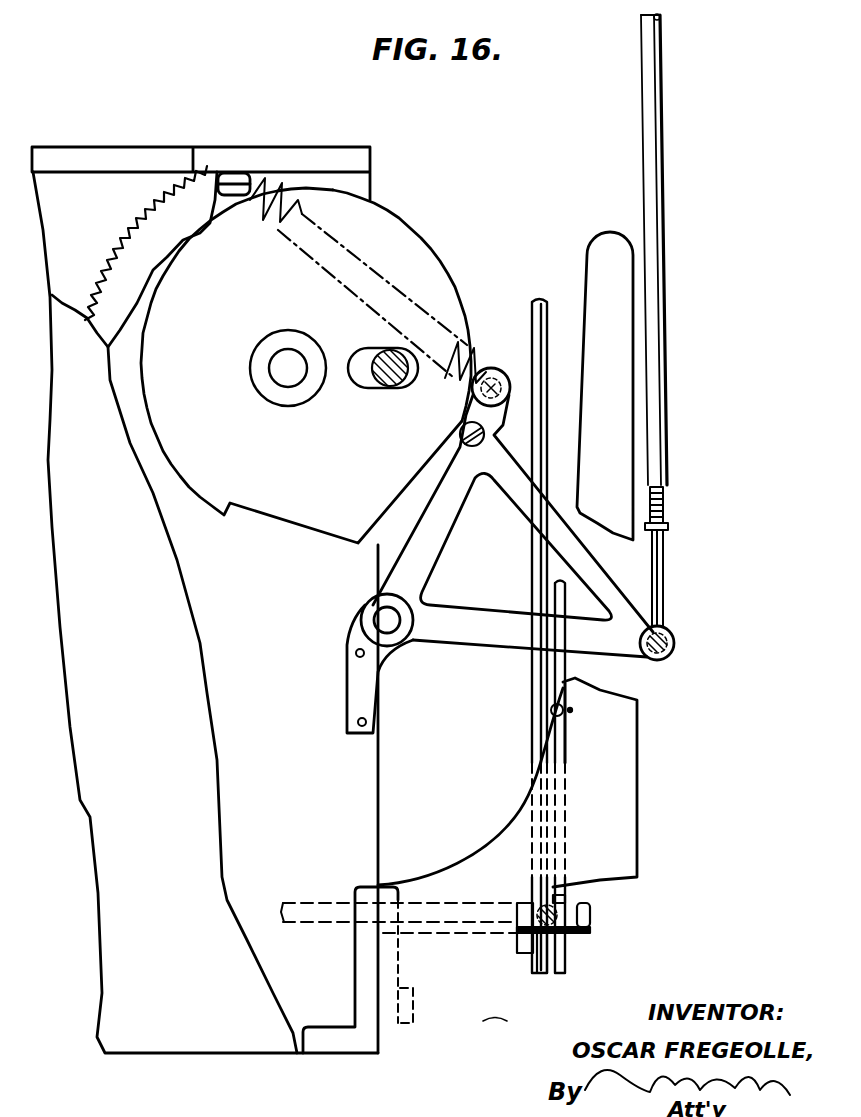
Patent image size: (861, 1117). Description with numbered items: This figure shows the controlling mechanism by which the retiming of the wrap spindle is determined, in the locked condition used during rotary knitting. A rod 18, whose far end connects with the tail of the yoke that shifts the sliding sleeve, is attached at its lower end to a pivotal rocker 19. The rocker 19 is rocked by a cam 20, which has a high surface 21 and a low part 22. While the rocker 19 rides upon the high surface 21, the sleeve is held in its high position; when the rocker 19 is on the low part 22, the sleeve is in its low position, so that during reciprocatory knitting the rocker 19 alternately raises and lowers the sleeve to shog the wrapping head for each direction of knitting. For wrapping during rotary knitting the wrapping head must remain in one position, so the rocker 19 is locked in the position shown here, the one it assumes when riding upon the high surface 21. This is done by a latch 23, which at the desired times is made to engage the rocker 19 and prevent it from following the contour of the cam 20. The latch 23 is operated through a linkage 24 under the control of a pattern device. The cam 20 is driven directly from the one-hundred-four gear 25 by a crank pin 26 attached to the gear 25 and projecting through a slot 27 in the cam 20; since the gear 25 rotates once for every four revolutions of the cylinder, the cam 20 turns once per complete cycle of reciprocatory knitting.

The rod 18 is at (655, 200).
The pivotal rocker 19 is at (613, 590).
The cam 20 is at (418, 253).
The high surface 21 is at (460, 300).
The low part 22 is at (168, 447).
The latch 23 is at (560, 597).
The linkage 24 is at (330, 927).
The 104 gear 25 is at (97, 265).
The crank pin 26 is at (388, 350).
The slot 27 is at (368, 386).